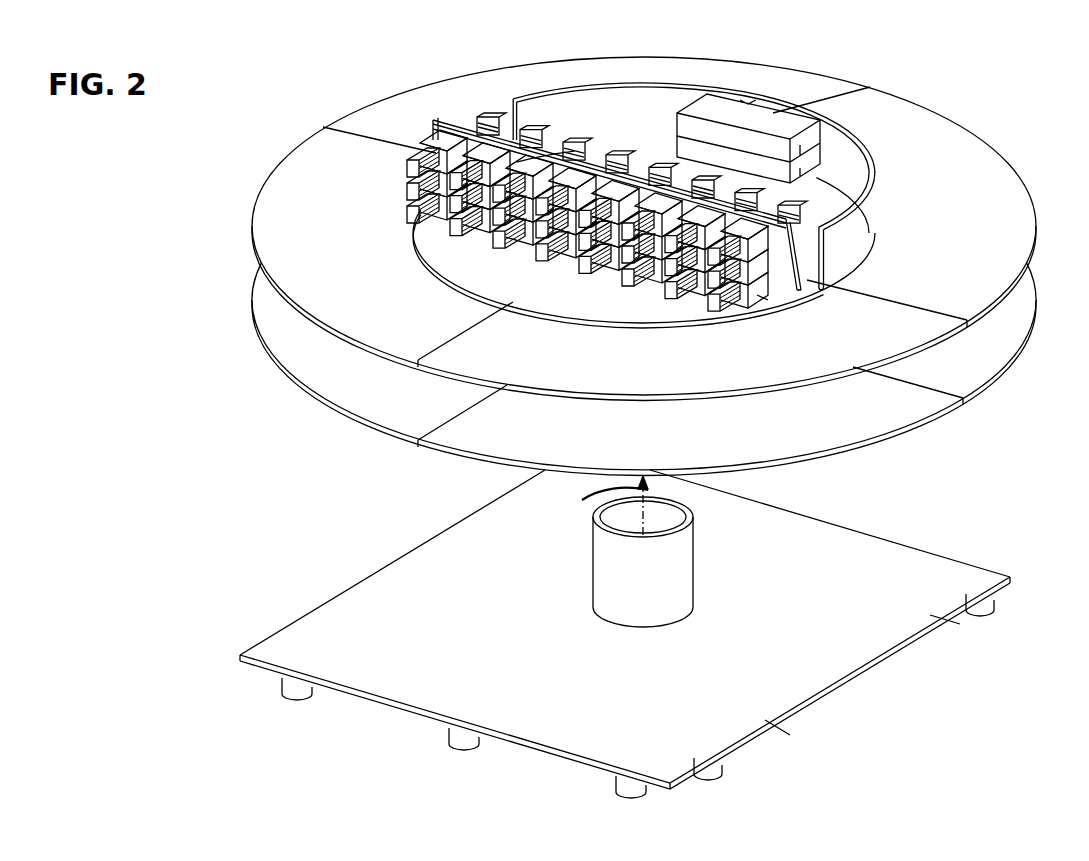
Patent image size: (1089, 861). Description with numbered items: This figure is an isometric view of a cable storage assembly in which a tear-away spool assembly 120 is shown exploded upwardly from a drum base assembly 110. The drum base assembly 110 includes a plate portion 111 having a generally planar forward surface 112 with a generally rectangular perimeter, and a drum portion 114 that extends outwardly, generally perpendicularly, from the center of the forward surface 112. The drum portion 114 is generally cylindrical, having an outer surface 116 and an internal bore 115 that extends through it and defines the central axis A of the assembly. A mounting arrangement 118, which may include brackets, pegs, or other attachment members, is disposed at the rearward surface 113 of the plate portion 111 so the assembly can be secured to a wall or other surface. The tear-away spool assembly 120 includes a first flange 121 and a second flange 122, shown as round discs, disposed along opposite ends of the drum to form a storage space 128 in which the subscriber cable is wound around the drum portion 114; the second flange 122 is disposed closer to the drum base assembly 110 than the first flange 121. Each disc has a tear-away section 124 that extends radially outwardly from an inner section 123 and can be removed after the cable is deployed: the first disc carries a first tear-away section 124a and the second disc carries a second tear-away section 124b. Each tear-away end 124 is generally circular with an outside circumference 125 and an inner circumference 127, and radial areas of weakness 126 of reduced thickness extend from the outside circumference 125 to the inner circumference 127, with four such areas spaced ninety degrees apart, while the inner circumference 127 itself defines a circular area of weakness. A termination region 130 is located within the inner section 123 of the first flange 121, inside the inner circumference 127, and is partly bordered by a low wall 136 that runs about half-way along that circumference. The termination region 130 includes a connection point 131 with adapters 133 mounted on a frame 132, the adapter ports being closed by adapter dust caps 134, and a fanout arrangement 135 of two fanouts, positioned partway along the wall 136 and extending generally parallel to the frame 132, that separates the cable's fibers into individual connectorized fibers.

The drum base assembly 110 is at (853, 688).
The plate portion 111 is at (943, 620).
The forward surface 112 is at (588, 730).
The rearward surface 113 is at (777, 723).
The drum portion 114 is at (703, 595).
The internal bore 115 is at (680, 522).
The outer surface 116 is at (607, 568).
The mounting arrangement 118 is at (467, 750).
The tear-away spool assembly 120 is at (923, 89).
The first flange 121 is at (290, 153).
The second flange 122 is at (280, 373).
The inner section 123 is at (478, 270).
The tear-away section 124 is at (280, 333).
The first tear-away section 124a is at (990, 234).
The second tear-away section 124b is at (874, 421).
The outside circumference 125 is at (997, 382).
The radial area of weakness 126 is at (472, 328).
The inner circumference 127 is at (637, 320).
The storage space 128 is at (535, 396).
The termination region 130 is at (672, 80).
The connection point 131 is at (432, 116).
The frame 132 is at (433, 123).
The adapter 133 is at (757, 290).
The adapter dust cap 134 is at (410, 215).
The fanout arrangement 135 is at (735, 116).
The wall 136 is at (575, 86).